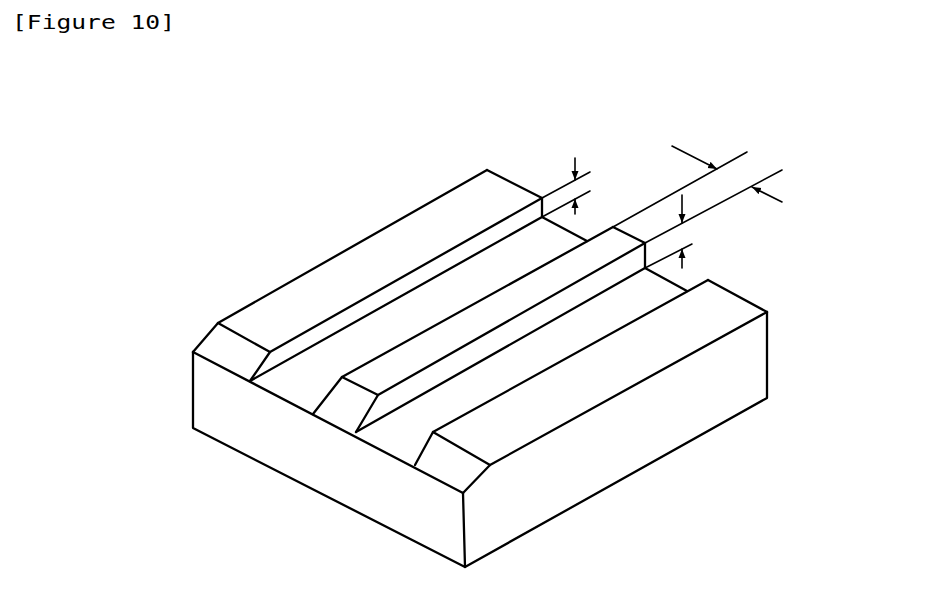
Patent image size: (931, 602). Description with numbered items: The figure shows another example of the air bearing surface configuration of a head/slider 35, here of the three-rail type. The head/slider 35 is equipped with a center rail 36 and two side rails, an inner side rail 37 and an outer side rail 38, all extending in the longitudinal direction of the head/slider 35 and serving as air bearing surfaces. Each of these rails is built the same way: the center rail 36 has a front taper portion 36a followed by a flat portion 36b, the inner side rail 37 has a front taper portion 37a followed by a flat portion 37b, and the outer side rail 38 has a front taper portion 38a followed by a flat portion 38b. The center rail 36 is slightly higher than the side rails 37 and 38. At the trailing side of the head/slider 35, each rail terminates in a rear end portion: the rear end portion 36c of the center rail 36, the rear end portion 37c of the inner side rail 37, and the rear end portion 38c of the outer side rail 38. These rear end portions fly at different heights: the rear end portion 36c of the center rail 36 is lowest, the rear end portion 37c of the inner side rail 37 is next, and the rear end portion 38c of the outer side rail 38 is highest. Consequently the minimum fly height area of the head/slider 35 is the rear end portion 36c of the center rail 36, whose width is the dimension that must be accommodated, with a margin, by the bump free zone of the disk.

The head/slider 35 is at (208, 161).
The center rail 36 is at (399, 329).
The front taper portion of center rail 36a is at (350, 403).
The flat portion of center rail 36b is at (391, 364).
The rear end portion of center rail 36c is at (628, 230).
The inner side rail 37 is at (350, 239).
The front taper portion of inner side rail 37a is at (225, 352).
The flat portion of inner side rail 37b is at (283, 303).
The rear end portion of inner side rail 37c is at (510, 183).
The outer side rail 38 is at (559, 418).
The front taper portion of outer side rail 38a is at (443, 472).
The flat portion of outer side rail 38b is at (533, 415).
The rear end portion of outer side rail 38c is at (743, 298).